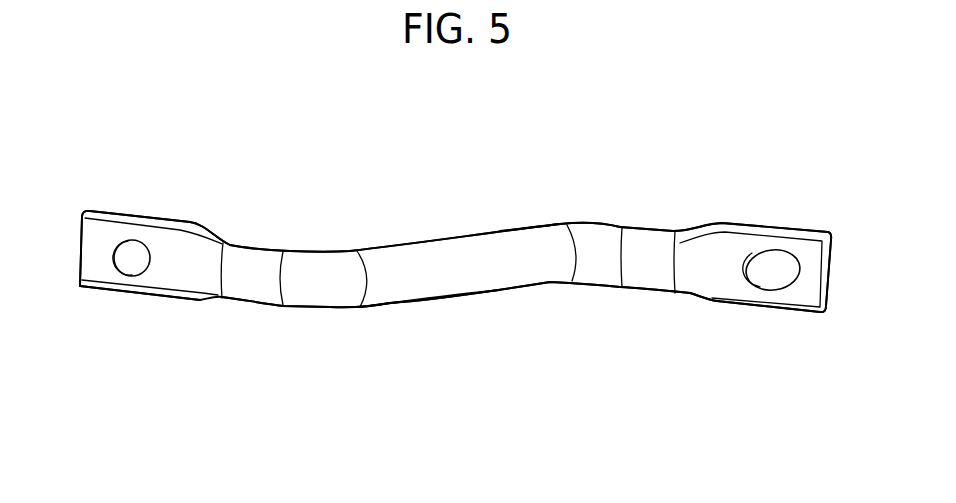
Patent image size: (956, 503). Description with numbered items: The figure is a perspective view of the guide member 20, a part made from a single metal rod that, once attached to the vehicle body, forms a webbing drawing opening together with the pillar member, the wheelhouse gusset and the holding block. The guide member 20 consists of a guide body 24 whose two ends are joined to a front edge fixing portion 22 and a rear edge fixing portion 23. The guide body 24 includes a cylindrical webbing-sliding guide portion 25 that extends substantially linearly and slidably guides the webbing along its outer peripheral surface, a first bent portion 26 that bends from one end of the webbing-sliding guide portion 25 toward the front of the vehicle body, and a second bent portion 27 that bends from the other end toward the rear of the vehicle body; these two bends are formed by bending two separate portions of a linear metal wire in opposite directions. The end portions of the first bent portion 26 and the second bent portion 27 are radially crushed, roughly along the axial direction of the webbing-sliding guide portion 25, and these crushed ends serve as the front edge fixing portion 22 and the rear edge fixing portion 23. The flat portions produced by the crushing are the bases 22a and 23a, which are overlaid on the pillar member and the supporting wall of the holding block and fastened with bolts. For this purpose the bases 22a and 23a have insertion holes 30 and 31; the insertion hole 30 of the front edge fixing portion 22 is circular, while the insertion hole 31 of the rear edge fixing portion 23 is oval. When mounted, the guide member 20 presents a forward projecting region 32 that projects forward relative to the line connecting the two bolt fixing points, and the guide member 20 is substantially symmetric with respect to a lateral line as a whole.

The guide member 20 is at (589, 196).
The front edge fixing portion 22 is at (155, 259).
The base 22a is at (118, 286).
The rear edge fixing portion 23 is at (752, 263).
The base 23a is at (740, 242).
The guide body 24 is at (455, 259).
The webbing-sliding guide portion 25 is at (470, 277).
The first bent portion 26 is at (257, 286).
The second bent portion 27 is at (630, 268).
The insertion hole 30 is at (137, 250).
The insertion hole 31 is at (777, 272).
The forward projecting region 32 is at (550, 227).